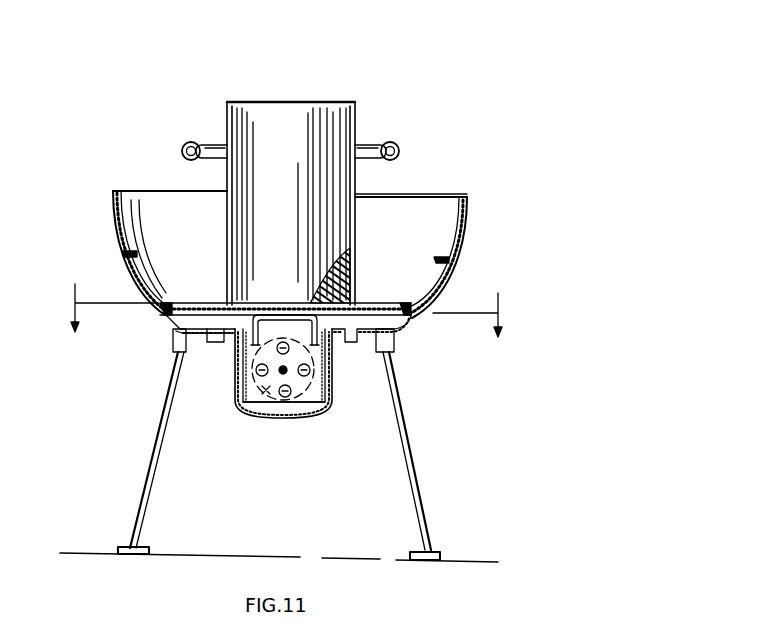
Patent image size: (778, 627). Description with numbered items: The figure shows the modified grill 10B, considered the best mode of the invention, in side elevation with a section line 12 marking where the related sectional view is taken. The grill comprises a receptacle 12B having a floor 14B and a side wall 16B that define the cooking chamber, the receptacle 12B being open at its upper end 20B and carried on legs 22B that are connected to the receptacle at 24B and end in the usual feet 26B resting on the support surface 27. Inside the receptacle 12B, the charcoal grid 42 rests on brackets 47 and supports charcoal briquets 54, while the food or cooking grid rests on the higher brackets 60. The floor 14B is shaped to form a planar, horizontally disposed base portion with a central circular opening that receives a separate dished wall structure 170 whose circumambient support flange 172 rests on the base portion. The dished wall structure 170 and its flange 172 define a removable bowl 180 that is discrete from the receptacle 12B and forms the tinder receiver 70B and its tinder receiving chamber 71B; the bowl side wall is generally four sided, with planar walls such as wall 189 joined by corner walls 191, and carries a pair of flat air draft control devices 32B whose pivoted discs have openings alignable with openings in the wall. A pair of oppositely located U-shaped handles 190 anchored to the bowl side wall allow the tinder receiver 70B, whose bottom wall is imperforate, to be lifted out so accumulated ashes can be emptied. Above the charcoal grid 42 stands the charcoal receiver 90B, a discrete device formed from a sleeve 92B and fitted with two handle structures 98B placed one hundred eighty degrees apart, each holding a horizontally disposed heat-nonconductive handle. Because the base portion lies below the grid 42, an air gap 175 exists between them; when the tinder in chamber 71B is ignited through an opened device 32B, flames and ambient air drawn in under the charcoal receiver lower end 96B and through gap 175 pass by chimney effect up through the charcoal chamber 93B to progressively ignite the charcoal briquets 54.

The grill 10B is at (470, 171).
The receptacle 12B is at (474, 230).
The side wall 16B is at (112, 231).
The upper end 20B is at (470, 197).
The charcoal grid 42 is at (185, 297).
The brackets 60 is at (441, 259).
The charcoal receiver 90B is at (361, 122).
The sleeve 92B is at (305, 112).
The charcoal chamber 93B is at (356, 287).
The handle structures 98B is at (188, 141).
The charcoal briquets 54 is at (348, 265).
The charcoal receiver lower end 96B is at (224, 292).
The handles 190 is at (270, 304).
The receptacle 12 is at (289, 298).
The brackets 47 is at (164, 313).
The air gap 175 is at (170, 326).
The support flange 172 is at (178, 340).
The floor 14B is at (194, 347).
The legs 22B is at (422, 471).
The leg connection 24B is at (432, 368).
The feet 26B is at (443, 550).
The dished wall structure 170 is at (240, 410).
The bowl 180 is at (338, 367).
The corner walls 191 is at (236, 372).
The planar wall 189 is at (323, 395).
The tinder receiver 70B is at (246, 418).
The tinder receiving chamber 71B is at (300, 419).
The air draft control devices 32B is at (268, 422).
The support surface 27 is at (318, 556).